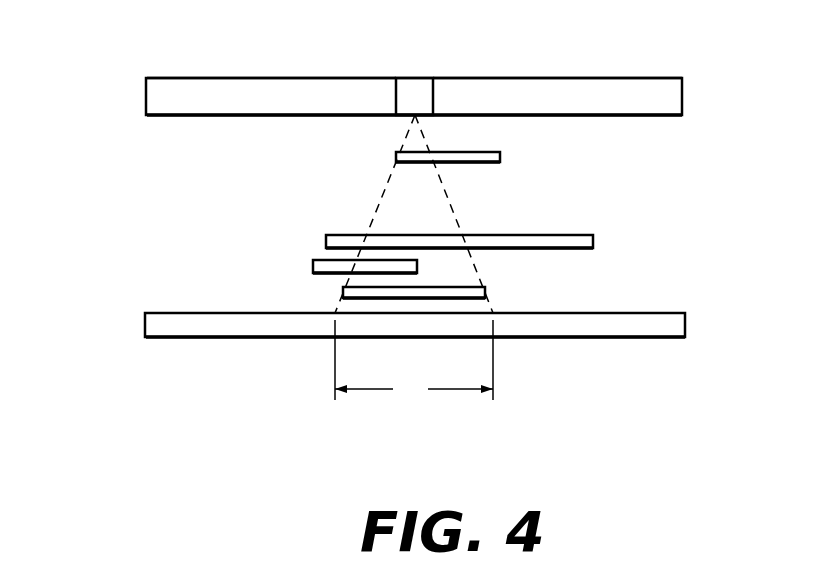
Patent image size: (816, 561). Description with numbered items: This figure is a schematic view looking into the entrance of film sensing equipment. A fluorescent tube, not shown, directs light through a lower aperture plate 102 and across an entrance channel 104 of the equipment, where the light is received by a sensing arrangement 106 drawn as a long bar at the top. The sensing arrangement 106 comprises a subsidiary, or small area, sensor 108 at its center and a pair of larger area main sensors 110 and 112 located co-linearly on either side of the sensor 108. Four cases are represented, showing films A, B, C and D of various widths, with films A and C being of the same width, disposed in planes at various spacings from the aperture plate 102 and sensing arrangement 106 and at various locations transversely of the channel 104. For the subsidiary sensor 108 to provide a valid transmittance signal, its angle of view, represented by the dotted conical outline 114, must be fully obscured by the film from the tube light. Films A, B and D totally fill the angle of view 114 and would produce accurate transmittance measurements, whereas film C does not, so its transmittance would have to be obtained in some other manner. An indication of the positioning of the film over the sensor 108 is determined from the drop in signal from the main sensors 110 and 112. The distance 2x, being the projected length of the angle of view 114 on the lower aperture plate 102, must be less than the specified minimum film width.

The lower aperture plate 102 is at (590, 312).
The entrance channel 104 is at (640, 206).
The sensing arrangement 106 is at (146, 90).
The subsidiary sensor 108 is at (418, 80).
The main sensor 110 is at (273, 80).
The main sensor 112 is at (545, 80).
The angle of view 114 is at (382, 192).
The film A is at (501, 157).
The film B is at (595, 241).
The film C is at (312, 266).
The film D is at (487, 292).
The distance 2x is at (414, 361).